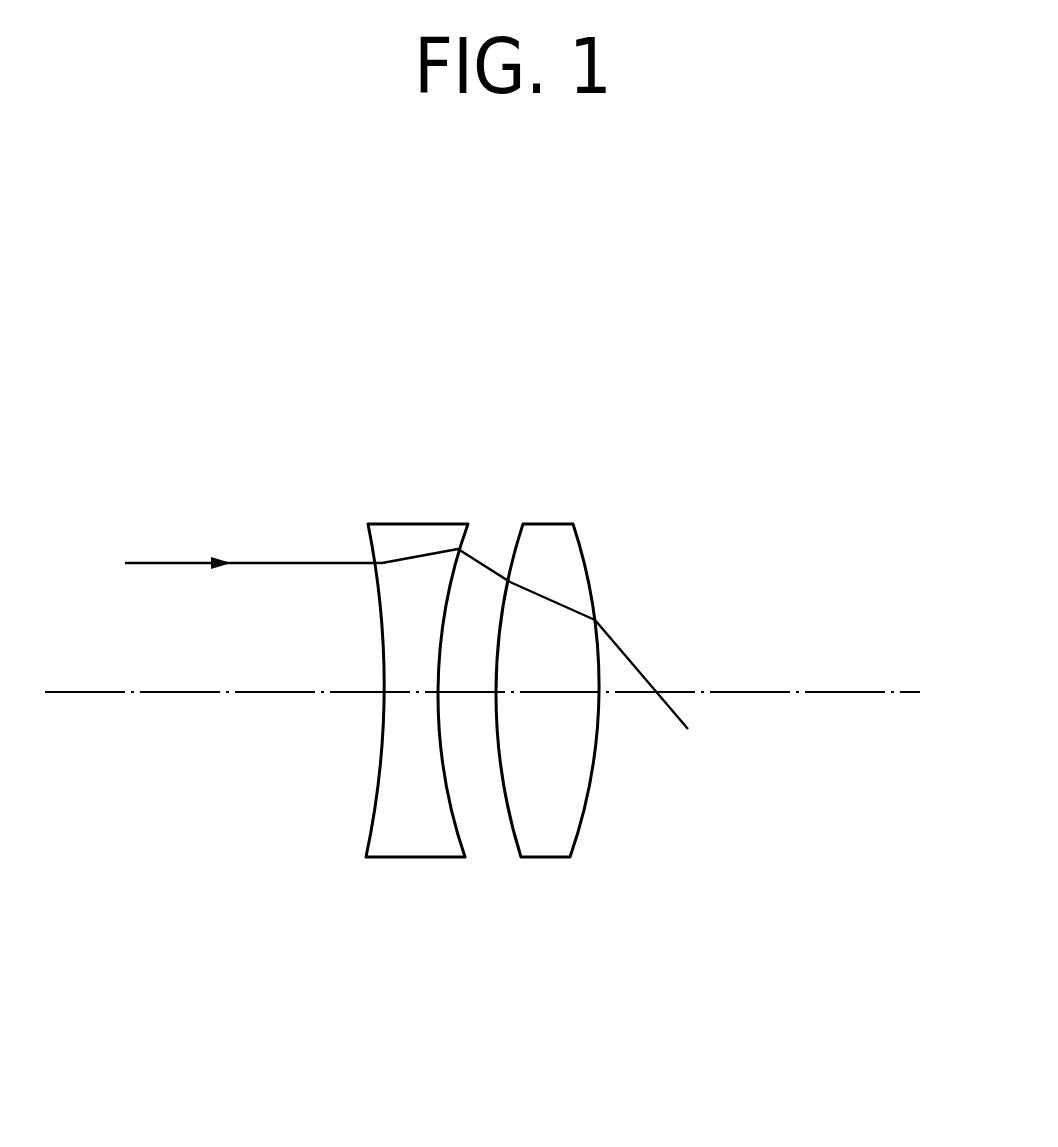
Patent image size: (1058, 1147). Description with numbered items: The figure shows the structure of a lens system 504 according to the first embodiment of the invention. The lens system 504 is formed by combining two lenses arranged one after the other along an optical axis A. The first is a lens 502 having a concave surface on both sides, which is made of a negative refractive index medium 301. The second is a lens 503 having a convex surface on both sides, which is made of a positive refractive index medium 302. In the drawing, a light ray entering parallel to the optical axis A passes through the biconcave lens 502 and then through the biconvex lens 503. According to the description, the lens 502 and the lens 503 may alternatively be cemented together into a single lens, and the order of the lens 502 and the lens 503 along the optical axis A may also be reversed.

The optical axis A is at (76, 690).
The negative refractive index medium 301 is at (410, 840).
The positive refractive index medium 302 is at (540, 840).
The lens 502 is at (417, 692).
The lens 503 is at (547, 692).
The lens system 504 is at (483, 657).